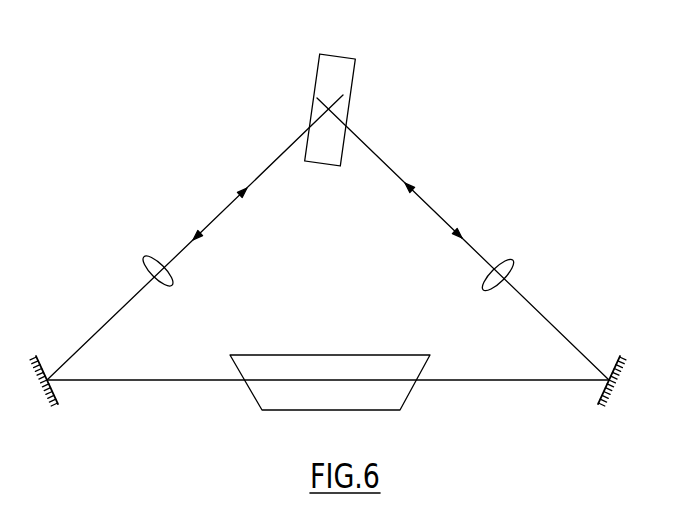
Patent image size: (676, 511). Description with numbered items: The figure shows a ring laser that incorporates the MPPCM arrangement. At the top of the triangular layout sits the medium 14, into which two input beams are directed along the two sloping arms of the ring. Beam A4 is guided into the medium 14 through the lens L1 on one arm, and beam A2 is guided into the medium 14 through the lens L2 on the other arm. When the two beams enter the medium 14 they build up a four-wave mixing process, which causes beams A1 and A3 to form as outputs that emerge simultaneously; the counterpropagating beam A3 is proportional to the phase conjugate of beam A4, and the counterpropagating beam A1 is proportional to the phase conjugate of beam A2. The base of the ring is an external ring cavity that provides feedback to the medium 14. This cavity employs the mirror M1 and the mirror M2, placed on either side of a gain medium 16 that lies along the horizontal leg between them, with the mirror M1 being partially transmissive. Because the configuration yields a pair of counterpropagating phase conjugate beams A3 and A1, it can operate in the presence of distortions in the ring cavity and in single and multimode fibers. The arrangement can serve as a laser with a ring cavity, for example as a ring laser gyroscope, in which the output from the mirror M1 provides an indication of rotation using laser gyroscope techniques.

The medium 14 is at (315, 77).
The gain medium 16 is at (405, 398).
The mirror M1 is at (55, 398).
The mirror M2 is at (595, 400).
The lens L1 is at (175, 278).
The lens L2 is at (483, 284).
The beam A1 is at (530, 296).
The beam A2 is at (389, 168).
The beam A3 is at (125, 296).
The beam A4 is at (269, 166).